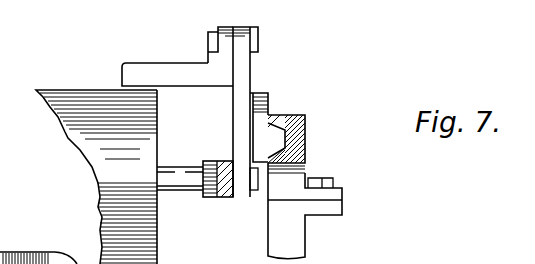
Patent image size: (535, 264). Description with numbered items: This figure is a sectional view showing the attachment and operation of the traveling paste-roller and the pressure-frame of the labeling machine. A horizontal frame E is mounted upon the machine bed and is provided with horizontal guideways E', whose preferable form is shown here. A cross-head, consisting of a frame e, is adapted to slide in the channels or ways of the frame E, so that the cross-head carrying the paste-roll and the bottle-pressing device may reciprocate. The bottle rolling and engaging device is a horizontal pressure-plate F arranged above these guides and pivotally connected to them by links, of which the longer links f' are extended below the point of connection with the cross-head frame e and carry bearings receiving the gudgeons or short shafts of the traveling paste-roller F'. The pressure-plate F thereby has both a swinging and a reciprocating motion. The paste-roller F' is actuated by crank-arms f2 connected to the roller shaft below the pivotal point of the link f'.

The pressure-plate F is at (177, 60).
The traveling paste-roller F' is at (93, 177).
The link f' is at (225, 112).
The crank-arm f2 is at (228, 191).
The cross-head frame e is at (271, 104).
The horizontal frame E is at (302, 124).
The horizontal guideway E' is at (305, 193).